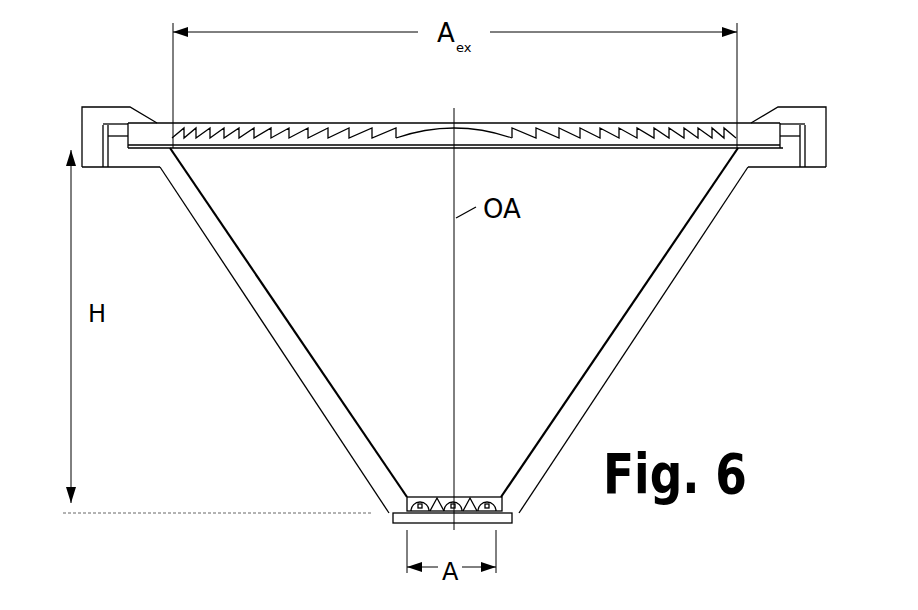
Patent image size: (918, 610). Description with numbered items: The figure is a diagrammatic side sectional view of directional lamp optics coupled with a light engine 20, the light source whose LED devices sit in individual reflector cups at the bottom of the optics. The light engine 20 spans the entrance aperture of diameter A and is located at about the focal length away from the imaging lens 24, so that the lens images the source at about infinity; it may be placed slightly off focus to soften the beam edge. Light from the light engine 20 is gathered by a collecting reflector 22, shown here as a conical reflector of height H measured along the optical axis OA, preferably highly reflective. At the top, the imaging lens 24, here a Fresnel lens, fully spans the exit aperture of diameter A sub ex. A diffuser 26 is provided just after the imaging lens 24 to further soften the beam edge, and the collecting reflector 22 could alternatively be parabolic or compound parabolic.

The light engine 20 is at (372, 533).
The collecting reflector 22 is at (636, 300).
The imaging lens 24 is at (592, 130).
The diffuser 26 is at (291, 123).